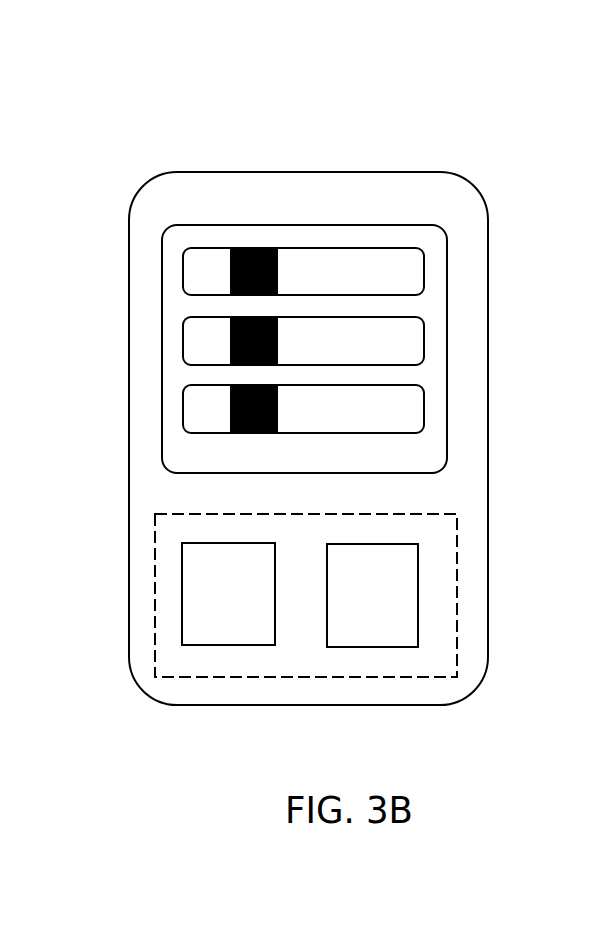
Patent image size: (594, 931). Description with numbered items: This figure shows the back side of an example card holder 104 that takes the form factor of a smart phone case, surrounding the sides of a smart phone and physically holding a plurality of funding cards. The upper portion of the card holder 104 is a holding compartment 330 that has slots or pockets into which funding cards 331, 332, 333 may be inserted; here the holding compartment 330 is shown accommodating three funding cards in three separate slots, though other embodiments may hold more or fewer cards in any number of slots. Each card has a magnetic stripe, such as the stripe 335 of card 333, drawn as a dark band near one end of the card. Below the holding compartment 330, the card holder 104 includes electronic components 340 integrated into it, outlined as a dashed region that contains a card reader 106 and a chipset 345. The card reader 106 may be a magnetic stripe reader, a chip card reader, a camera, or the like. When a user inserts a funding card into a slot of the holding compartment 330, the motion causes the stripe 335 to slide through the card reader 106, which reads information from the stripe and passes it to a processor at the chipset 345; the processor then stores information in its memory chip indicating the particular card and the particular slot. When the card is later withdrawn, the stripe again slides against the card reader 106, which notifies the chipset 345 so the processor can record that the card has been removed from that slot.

The card holder 104 is at (177, 123).
The holding compartment 330 is at (162, 326).
The funding card 331 is at (424, 276).
The funding card 332 is at (424, 341).
The funding card 333 is at (424, 413).
The magnetic stripe 335 is at (229, 408).
The electronic components 340 is at (155, 589).
The card reader 106 is at (255, 608).
The chipset 345 is at (398, 608).